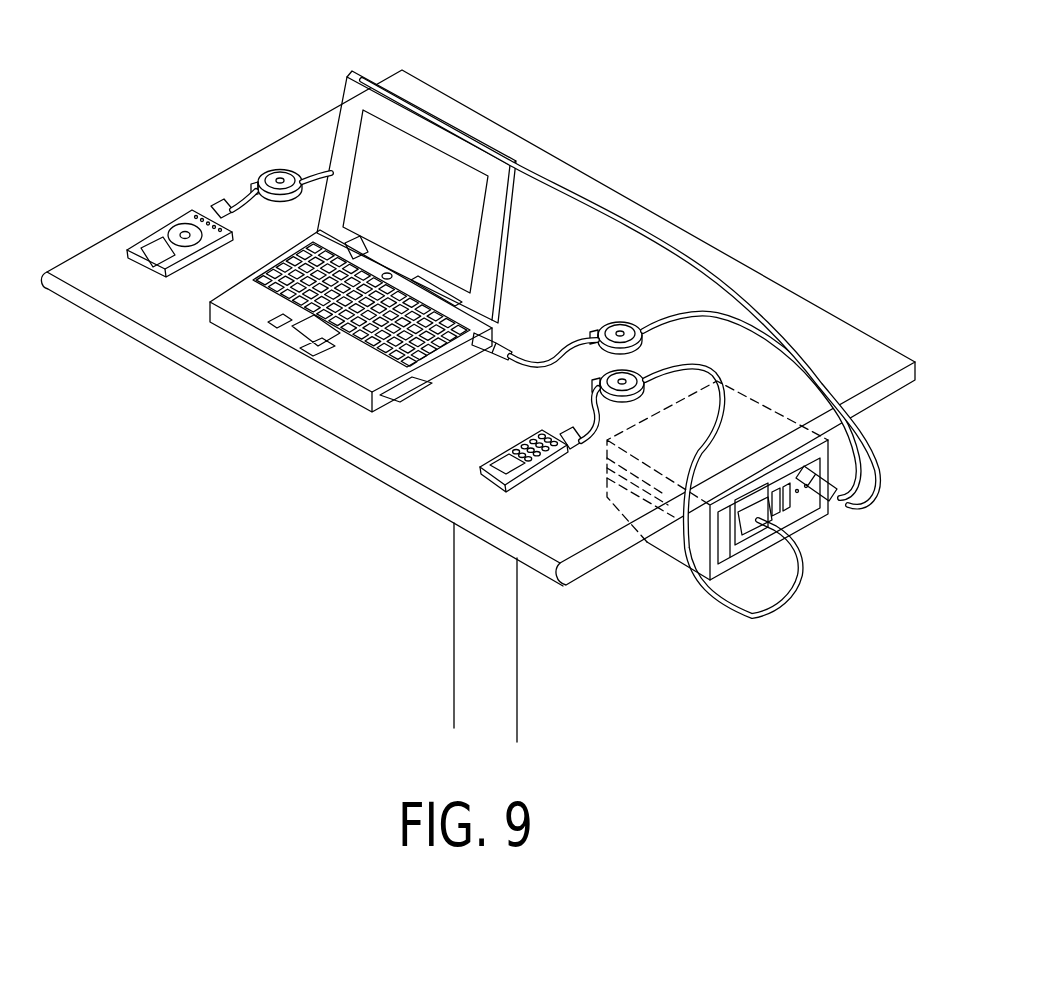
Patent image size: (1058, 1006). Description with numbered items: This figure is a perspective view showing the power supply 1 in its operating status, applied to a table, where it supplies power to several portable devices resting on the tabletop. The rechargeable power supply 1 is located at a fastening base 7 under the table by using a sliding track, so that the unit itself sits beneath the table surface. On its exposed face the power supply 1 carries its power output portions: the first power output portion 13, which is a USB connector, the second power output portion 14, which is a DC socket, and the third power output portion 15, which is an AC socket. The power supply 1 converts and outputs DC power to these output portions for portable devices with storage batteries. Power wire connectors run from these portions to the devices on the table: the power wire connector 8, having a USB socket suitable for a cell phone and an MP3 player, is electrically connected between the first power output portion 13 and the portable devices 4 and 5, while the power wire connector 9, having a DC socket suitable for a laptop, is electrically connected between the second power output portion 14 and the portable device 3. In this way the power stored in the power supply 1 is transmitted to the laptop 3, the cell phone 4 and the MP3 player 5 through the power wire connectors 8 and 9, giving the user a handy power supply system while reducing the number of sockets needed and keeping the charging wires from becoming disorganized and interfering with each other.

The power supply 1 is at (803, 506).
The portable device 3 is at (458, 126).
The portable device 4 is at (473, 484).
The portable device 5 is at (145, 232).
The fastening base 7 is at (667, 560).
The power wire connector 8 is at (315, 167).
The power wire connector 9 is at (720, 311).
The first power output portion 13 is at (815, 510).
The second power output portion 14 is at (838, 456).
The third power output portion 15 is at (760, 488).